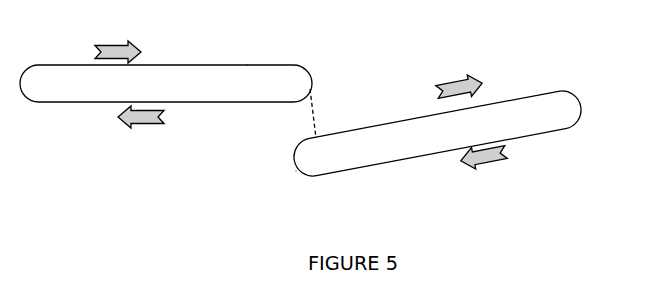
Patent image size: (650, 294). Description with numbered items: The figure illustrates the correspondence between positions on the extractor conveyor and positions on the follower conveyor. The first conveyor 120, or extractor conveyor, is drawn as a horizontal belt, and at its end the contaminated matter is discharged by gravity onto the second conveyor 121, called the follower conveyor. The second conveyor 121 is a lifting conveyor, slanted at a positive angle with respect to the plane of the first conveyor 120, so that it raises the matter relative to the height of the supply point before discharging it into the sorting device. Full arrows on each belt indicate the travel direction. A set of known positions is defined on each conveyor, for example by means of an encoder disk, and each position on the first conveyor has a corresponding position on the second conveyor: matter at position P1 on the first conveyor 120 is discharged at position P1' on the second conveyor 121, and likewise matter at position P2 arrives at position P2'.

The first conveyor 120 is at (103, 95).
The second conveyor 121 is at (398, 156).
The position P1 on the first conveyor P1 is at (327, 45).
The position P2 on the first conveyor P2 is at (269, 40).
The position P1' on the second conveyor P1' is at (284, 114).
The position P2' on the second conveyor P2' is at (275, 194).